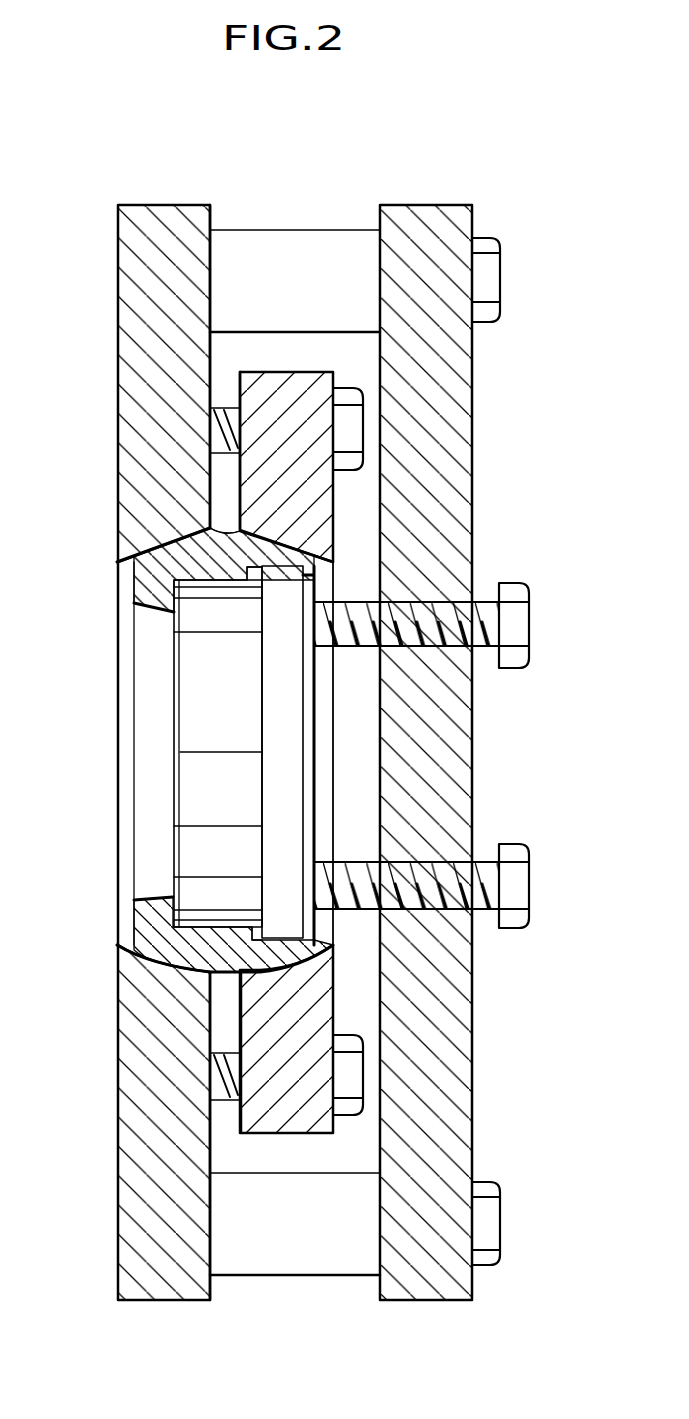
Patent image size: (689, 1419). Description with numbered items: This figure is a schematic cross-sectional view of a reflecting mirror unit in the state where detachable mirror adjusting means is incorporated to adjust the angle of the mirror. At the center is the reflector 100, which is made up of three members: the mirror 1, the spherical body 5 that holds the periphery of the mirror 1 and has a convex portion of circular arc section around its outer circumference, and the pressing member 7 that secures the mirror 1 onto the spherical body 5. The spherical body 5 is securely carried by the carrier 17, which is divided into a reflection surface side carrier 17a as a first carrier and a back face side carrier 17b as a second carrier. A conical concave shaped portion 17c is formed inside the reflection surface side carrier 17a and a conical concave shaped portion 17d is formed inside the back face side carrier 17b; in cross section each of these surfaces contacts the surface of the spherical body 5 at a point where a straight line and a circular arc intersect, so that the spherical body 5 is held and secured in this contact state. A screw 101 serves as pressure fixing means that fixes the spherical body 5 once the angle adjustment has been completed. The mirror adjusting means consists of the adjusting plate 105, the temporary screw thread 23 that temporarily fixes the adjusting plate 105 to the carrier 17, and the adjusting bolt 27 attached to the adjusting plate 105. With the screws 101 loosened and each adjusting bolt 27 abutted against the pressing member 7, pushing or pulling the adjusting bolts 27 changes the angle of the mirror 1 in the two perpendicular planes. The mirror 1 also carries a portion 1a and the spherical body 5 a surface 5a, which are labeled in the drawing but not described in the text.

The carrier 17 is at (165, 203).
The reflection surface side carrier 17a is at (152, 315).
The back face side carrier 17b is at (285, 380).
The conical concave shaped portion 17c is at (215, 527).
The conical concave shaped portion 17d is at (250, 510).
The spherical body 5 is at (165, 572).
The spherical surface 5a is at (213, 527).
The mirror 1 is at (200, 750).
The sensor body portion 1a is at (176, 668).
The reflector 100 is at (150, 790).
The screw 101 is at (365, 430).
The pressing member 7 is at (285, 755).
The adjusting bolt 27 is at (520, 886).
The adjusting plate 105 is at (440, 1075).
The temporary screw thread for adjusting plate 23 is at (505, 1226).